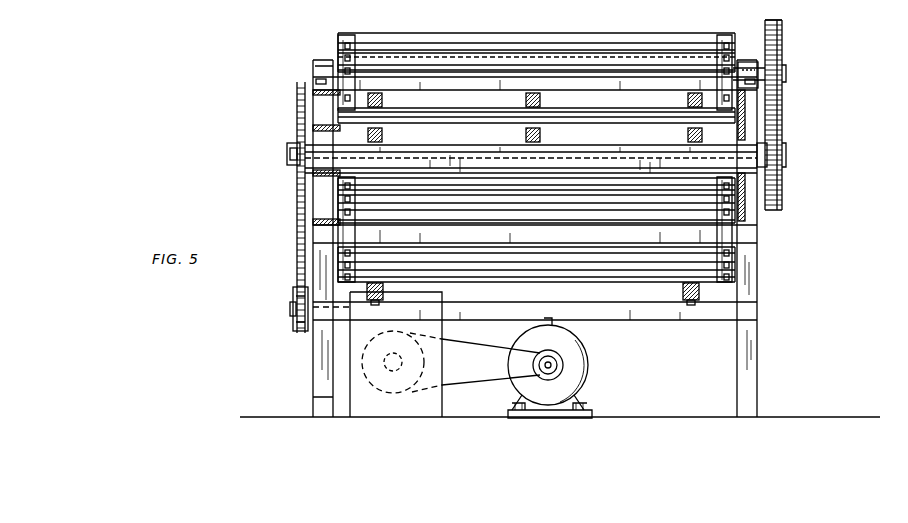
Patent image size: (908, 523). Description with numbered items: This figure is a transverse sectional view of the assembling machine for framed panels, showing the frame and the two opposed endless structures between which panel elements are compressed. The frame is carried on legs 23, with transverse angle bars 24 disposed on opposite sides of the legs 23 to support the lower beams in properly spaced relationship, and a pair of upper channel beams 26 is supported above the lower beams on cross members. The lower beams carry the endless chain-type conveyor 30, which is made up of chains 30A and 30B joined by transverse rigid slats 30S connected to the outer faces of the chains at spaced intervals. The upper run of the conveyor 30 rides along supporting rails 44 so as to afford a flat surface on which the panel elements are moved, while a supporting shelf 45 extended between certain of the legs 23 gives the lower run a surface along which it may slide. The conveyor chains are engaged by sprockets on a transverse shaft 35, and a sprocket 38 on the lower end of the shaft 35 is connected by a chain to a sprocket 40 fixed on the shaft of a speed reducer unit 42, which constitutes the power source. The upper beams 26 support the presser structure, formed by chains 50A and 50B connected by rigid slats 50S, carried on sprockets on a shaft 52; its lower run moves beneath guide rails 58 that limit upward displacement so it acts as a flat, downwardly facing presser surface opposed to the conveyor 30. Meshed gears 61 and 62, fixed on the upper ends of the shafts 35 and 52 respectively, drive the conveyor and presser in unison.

The legs 23 is at (757, 346).
The transverse angle bars 24 is at (757, 238).
The upper channel beams 26 is at (330, 200).
The conveyor 30 is at (899, 13).
The chain 30A is at (735, 266).
The chain 30B is at (352, 266).
The transverse rigid slats 30S is at (466, 127).
The transverse shaft 35 is at (300, 132).
The sprocket 38 is at (305, 172).
The sprocket 40 is at (293, 316).
The speed reducer unit 42 is at (430, 403).
The supporting rails 44 is at (384, 133).
The supporting shelf 45 is at (385, 300).
The chain 50A is at (738, 58).
The chain 50B is at (338, 50).
The rigid slats 50S is at (558, 33).
The shaft 52 is at (765, 22).
The guide rails 58 is at (384, 100).
The gear 61 is at (782, 190).
The gear 62 is at (783, 57).